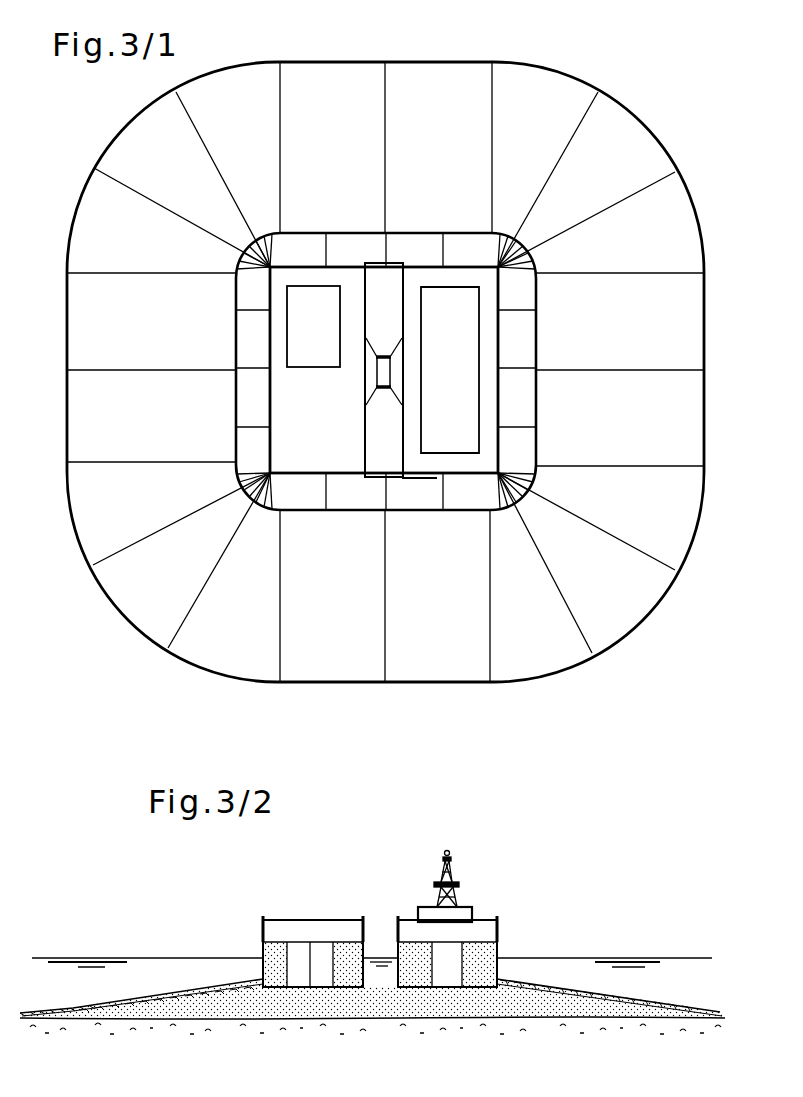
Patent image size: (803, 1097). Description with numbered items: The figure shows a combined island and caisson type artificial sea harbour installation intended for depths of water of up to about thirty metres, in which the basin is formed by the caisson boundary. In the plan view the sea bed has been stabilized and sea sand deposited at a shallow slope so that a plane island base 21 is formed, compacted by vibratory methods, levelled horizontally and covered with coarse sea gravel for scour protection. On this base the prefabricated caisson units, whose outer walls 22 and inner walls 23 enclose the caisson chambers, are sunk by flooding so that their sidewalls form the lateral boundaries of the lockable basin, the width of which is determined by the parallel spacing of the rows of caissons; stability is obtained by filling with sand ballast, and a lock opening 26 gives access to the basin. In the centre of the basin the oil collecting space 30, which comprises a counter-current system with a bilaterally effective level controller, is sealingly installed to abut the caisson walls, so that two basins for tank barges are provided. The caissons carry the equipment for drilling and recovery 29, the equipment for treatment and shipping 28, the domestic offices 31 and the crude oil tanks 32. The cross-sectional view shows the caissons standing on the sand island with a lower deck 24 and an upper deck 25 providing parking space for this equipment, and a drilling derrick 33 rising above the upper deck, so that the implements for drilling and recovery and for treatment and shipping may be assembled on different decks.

The island base 21 is at (623, 117).
The intermediate ring wall 22 is at (523, 398).
The inner wall 23 is at (487, 302).
The lower deck 24 is at (487, 938).
The upper deck 25 is at (487, 921).
The opening 26 is at (428, 492).
The treatment and shipping equipment 28 is at (458, 442).
The drilling and recovery equipment 29 is at (458, 356).
The oil collecting space 30 is at (385, 356).
The domestic offices 31 is at (317, 358).
The crude oil tanks 32 is at (323, 950).
The derrick 33 is at (468, 902).